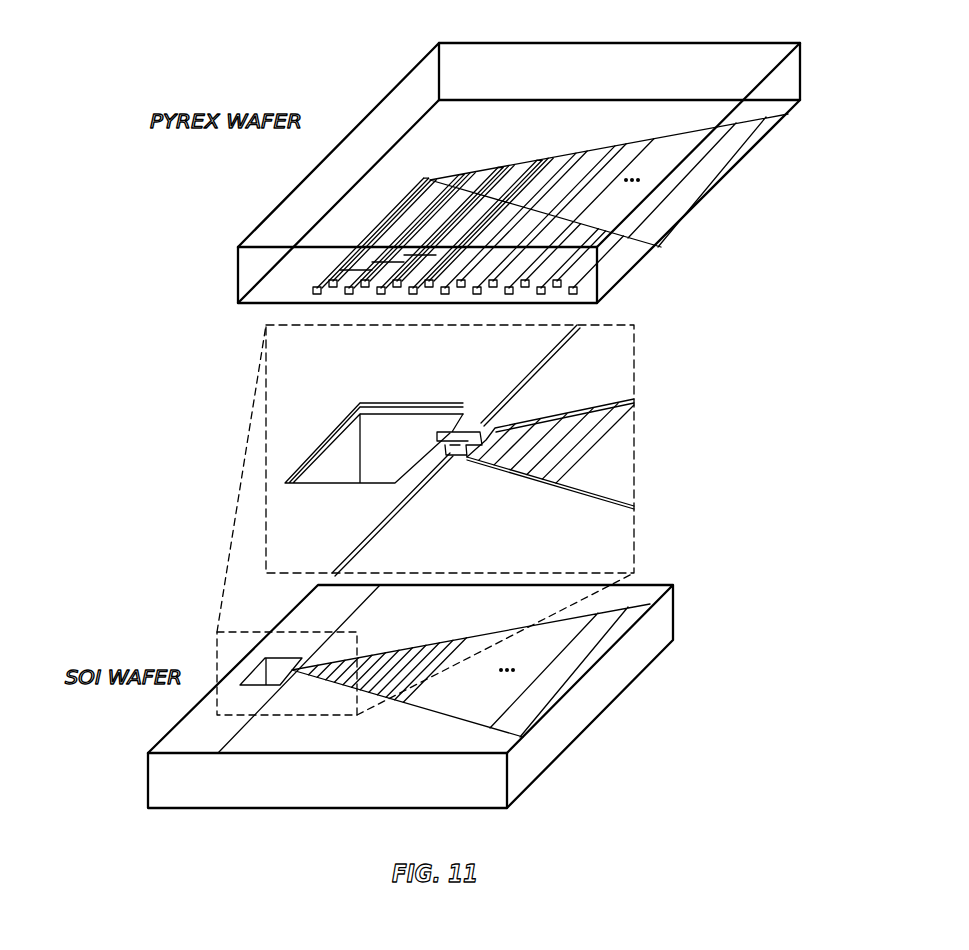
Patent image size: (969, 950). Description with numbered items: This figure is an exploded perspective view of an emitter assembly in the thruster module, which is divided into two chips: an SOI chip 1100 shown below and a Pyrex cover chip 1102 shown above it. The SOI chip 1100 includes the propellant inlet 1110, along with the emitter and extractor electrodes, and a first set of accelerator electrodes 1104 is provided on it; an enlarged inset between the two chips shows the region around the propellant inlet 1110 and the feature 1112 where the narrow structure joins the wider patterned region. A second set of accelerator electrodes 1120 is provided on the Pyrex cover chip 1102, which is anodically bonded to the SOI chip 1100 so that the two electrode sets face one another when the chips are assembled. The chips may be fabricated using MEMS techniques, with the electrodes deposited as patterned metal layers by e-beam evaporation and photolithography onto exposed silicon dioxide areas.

The SOI chip 1100 is at (242, 808).
The Pyrex cover chip 1102 is at (657, 43).
The first set of accelerator electrodes 1104 is at (393, 712).
The propellant inlet 1110 is at (378, 403).
The beam anchor/hinge 1112 is at (470, 420).
The second set of accelerator electrodes 1120 is at (524, 157).